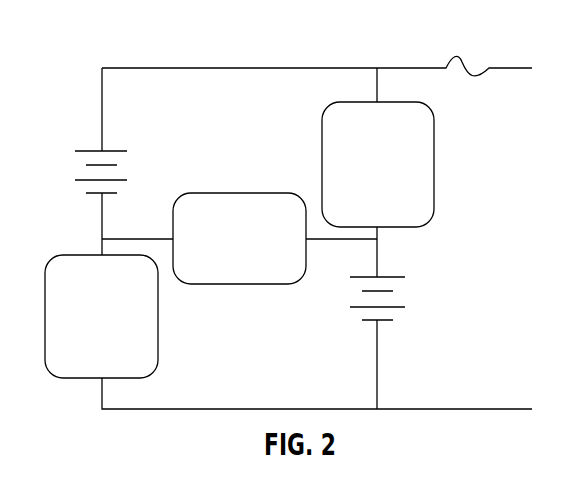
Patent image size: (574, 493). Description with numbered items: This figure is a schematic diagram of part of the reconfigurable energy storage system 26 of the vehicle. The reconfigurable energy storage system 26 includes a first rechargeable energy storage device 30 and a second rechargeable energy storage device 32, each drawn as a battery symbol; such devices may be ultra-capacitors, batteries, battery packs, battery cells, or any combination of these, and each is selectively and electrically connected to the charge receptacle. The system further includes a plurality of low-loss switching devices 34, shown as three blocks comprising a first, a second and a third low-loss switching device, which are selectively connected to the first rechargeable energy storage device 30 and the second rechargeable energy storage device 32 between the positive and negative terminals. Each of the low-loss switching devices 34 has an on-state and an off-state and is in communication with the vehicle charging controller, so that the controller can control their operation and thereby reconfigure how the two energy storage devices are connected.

The reconfigurable energy storage system 26 is at (104, 38).
The first rechargeable energy storage device 30 is at (88, 150).
The second rechargeable energy storage device 32 is at (392, 276).
The low-loss switching devices 34 is at (78, 254).